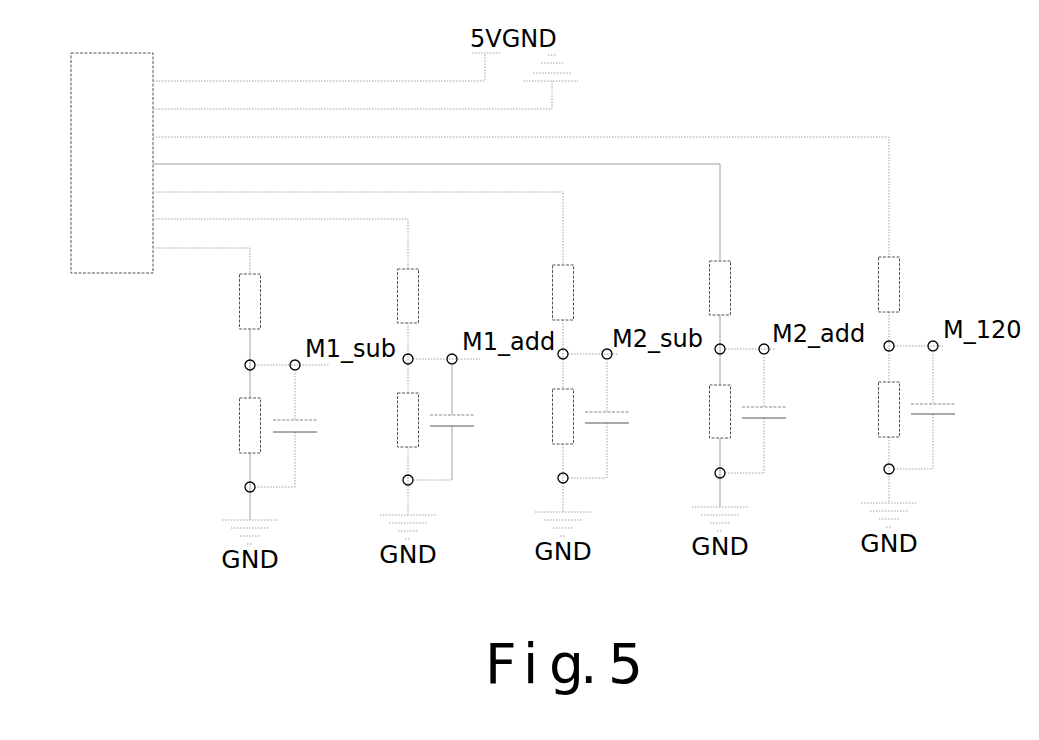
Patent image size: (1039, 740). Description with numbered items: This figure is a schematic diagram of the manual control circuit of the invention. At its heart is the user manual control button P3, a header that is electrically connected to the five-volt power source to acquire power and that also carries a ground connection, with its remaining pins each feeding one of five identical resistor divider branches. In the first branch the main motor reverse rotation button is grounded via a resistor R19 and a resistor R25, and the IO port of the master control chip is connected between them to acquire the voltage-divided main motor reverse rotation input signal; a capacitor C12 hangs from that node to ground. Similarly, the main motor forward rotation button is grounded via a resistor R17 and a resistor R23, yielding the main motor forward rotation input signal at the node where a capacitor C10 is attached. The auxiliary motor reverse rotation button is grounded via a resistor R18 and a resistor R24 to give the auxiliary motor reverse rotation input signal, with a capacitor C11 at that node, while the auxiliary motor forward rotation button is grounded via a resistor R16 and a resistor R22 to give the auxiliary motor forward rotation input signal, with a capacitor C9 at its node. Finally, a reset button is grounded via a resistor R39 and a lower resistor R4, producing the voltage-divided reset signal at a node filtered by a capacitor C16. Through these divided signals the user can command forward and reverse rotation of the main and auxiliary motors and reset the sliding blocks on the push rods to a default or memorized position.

The user manual control button P3 is at (118, 163).
The resistor R19 is at (279, 299).
The resistor R25 is at (218, 432).
The 0.1uF/50V capacitor C12 is at (310, 459).
The resistor R17 is at (437, 293).
The resistor R23 is at (380, 429).
The 0.1uF/50V capacitor C10 is at (467, 459).
The resistor R18 is at (593, 289).
The resistor R24 is at (535, 424).
The 0.1uF/50V capacitor C11 is at (622, 451).
The resistor R16 is at (750, 285).
The resistor R22 is at (691, 421).
The 0.1uF/50V capacitor C9 is at (774, 449).
The resistor R39 is at (917, 282).
The 2.2K resistor R4 is at (861, 420).
The 0.1uF/50V capacitor C16 is at (950, 445).